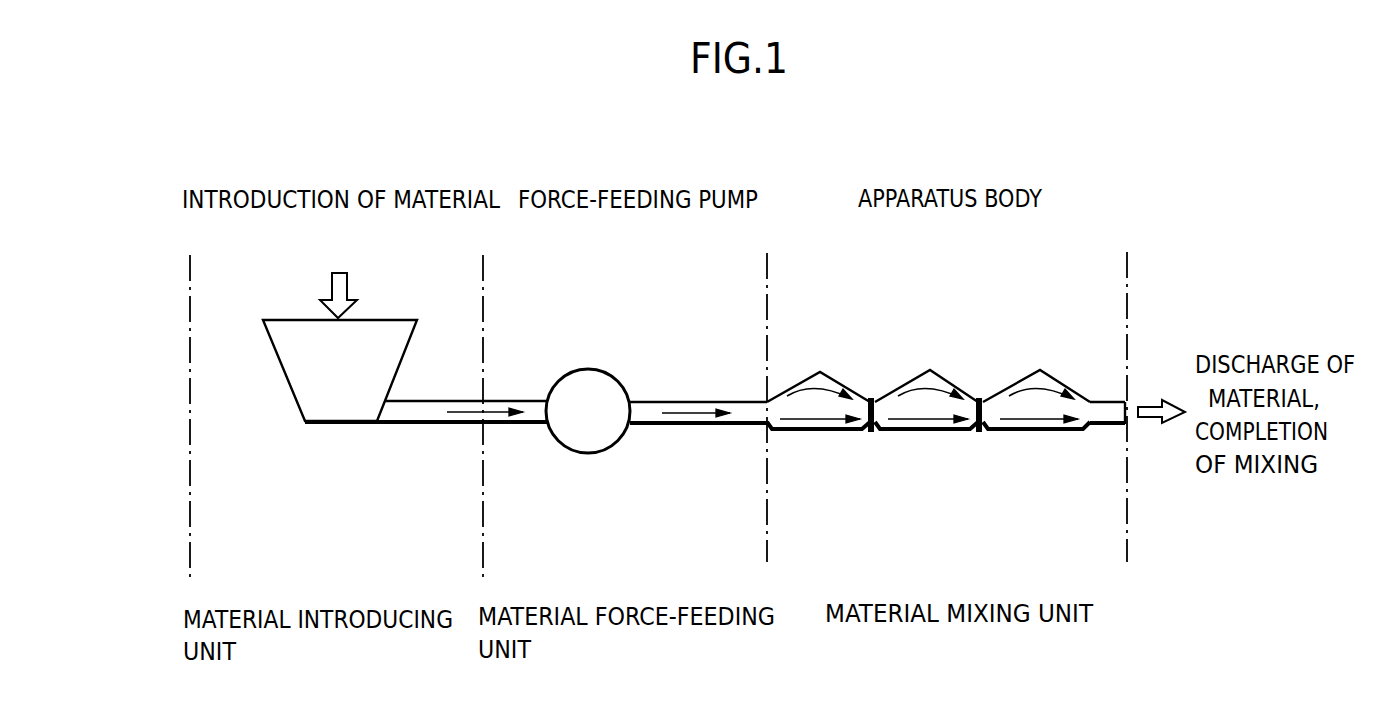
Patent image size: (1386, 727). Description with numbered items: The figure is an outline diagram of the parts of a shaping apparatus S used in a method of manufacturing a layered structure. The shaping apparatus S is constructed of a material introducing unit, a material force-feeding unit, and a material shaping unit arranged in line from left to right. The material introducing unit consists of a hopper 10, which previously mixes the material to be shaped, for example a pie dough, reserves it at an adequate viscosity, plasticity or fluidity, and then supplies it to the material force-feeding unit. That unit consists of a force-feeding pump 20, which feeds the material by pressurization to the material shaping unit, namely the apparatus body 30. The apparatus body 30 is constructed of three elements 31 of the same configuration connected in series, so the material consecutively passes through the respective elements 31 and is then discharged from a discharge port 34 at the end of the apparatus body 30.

The shaping apparatus S is at (183, 428).
The hopper 10 is at (291, 386).
The force-feeding pump 20 is at (588, 368).
The apparatus body 30 is at (1040, 323).
The elements 31 is at (843, 386).
The discharge port 34 is at (1104, 402).